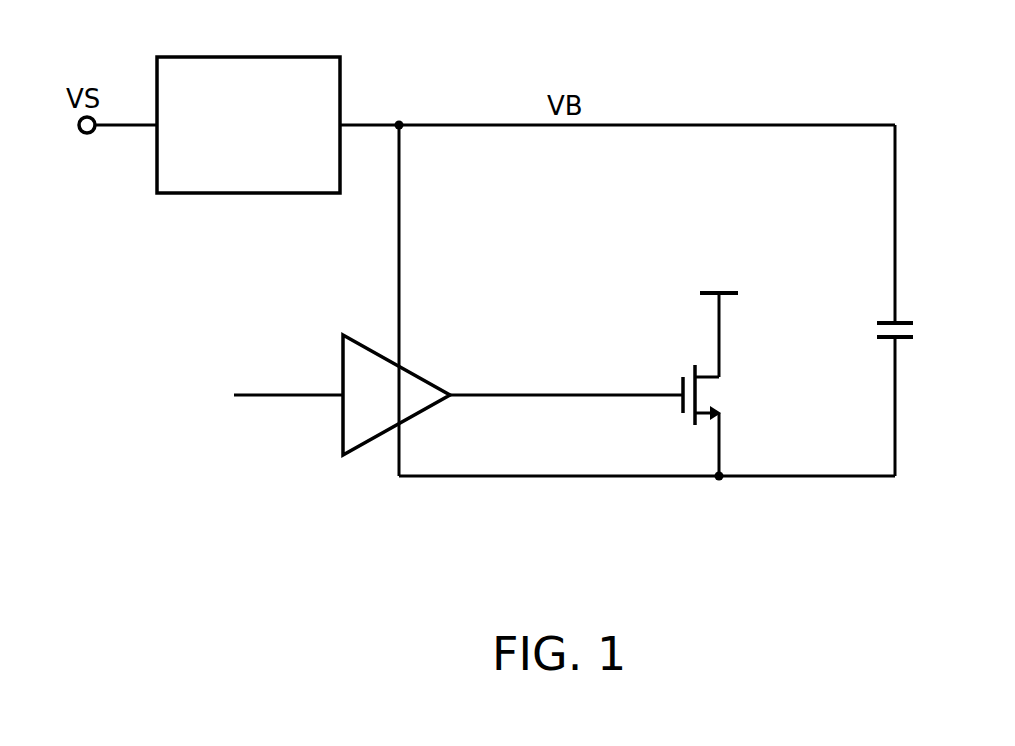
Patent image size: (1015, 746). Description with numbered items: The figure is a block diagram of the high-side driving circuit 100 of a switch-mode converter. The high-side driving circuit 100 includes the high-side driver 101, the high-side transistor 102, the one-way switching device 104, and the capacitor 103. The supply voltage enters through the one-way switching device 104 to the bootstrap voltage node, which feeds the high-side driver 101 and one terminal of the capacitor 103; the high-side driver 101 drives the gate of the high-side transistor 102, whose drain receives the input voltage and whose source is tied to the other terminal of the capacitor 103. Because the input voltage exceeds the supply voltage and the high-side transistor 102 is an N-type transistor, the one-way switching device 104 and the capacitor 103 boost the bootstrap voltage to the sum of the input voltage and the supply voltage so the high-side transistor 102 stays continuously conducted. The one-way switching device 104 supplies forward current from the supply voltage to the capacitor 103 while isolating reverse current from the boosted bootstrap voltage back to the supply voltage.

The high-side driving circuit 100 is at (953, 580).
The high-side driver 101 is at (422, 375).
The high-side transistor 102 is at (710, 395).
The capacitor 103 is at (910, 333).
The one-way switching device 104 is at (157, 57).